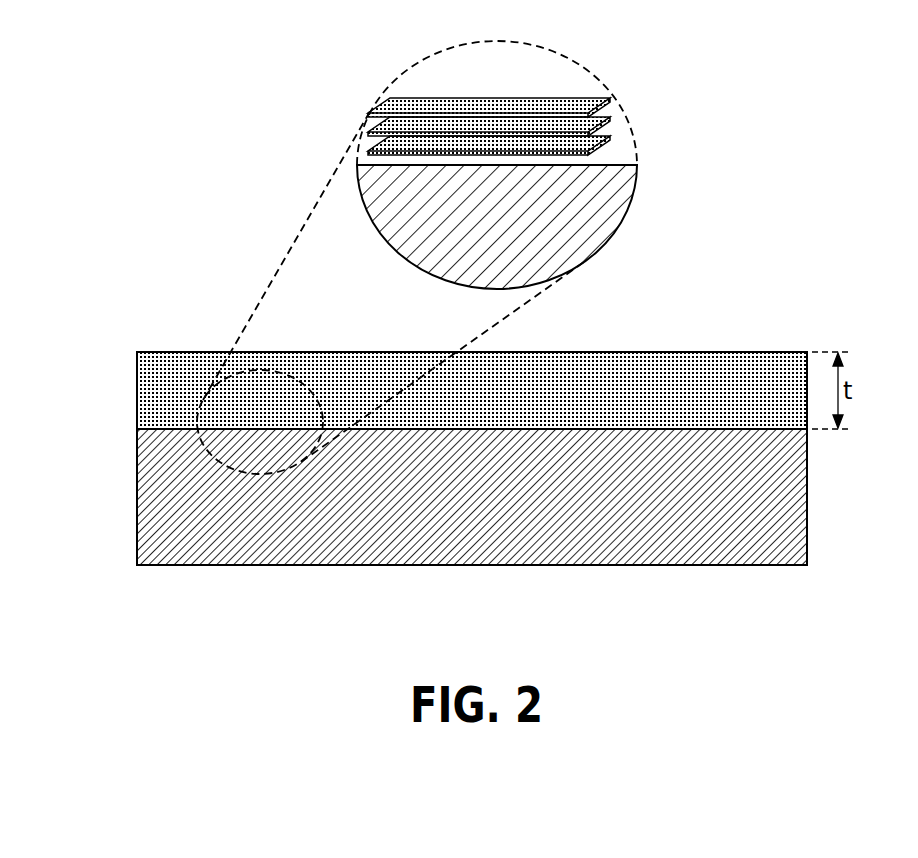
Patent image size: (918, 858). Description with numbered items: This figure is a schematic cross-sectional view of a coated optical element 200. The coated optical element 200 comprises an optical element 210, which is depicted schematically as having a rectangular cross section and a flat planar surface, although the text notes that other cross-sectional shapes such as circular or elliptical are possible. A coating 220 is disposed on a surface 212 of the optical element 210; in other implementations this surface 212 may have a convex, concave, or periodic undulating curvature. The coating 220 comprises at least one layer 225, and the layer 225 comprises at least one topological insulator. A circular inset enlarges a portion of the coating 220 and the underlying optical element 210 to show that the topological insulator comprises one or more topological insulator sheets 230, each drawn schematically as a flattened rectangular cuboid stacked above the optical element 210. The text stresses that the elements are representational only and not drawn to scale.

The coated optical element 200 is at (192, 152).
The optical element 210 is at (136, 483).
The surface 212 is at (670, 430).
The coating 220 is at (129, 353).
The layer 225 is at (735, 354).
The topological insulator sheet 230 is at (402, 106).